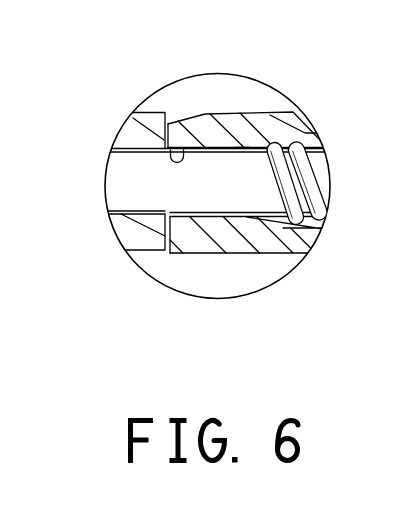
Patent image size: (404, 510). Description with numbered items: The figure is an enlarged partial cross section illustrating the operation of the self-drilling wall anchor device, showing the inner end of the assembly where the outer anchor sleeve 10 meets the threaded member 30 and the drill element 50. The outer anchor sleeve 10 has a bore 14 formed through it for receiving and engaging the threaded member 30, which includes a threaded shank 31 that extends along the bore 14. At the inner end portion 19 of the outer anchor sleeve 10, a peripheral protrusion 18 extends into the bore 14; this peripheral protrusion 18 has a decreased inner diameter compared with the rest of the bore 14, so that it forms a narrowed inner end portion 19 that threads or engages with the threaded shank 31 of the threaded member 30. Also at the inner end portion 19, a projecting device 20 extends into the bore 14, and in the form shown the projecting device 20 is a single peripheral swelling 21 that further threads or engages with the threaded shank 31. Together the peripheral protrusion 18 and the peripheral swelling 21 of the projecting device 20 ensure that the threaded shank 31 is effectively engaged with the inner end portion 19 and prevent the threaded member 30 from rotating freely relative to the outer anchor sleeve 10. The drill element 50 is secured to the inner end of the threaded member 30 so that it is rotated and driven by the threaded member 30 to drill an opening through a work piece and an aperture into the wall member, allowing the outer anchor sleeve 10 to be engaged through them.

The outer anchor sleeve 10 is at (200, 114).
The bore 14 is at (165, 141).
The peripheral protrusion 18 is at (180, 218).
The inner end portion 19 is at (202, 250).
The projecting device 20 is at (243, 216).
The peripheral swelling 21 is at (243, 147).
The threaded member 30 is at (322, 181).
The threaded shank 31 is at (313, 146).
The drill element 50 is at (122, 141).